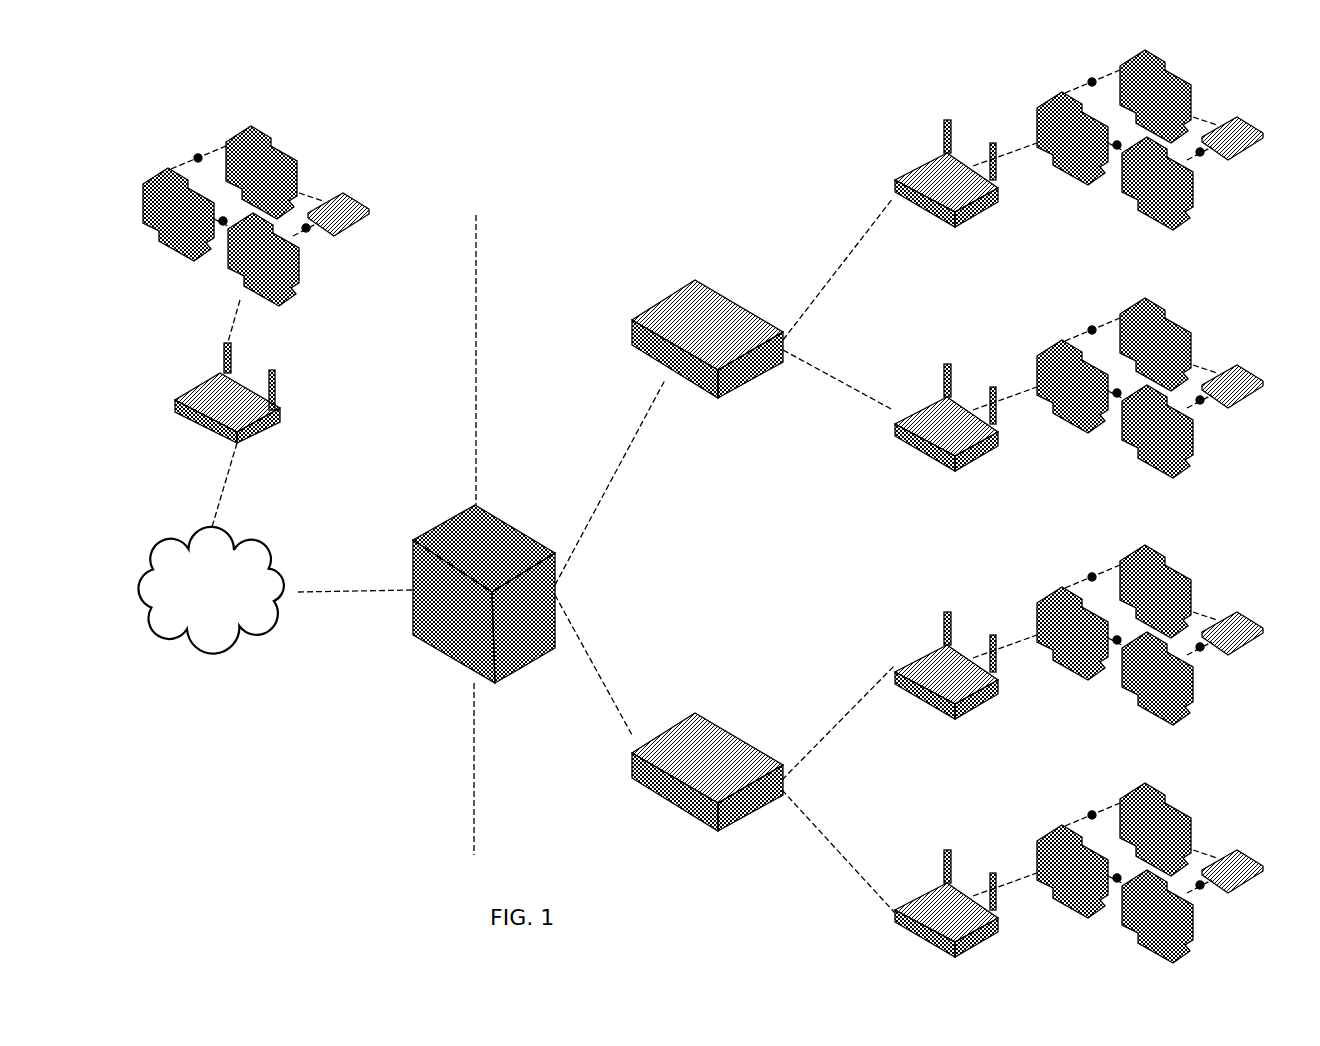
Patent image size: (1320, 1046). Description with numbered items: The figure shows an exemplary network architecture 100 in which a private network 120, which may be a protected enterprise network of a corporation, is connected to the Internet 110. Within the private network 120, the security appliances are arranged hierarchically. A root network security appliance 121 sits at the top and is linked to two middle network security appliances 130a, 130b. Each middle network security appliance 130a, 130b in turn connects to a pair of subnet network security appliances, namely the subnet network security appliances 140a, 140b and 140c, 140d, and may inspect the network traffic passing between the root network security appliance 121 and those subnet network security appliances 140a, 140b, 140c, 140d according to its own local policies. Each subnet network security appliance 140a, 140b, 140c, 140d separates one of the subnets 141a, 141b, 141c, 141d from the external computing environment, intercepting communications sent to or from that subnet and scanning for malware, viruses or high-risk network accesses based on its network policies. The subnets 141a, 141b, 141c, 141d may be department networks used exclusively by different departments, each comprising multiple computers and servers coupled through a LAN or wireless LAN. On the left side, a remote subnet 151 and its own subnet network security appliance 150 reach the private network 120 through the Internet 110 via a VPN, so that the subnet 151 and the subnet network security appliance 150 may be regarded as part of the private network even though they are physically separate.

The network architecture 100 is at (507, 64).
The Internet 110 is at (210, 590).
The private network 120 is at (580, 189).
The root network security appliance 121 is at (540, 499).
The middle network security appliance 130a is at (726, 244).
The middle network security appliance 130b is at (726, 694).
The subnet network security appliance 140a is at (968, 92).
The subnet network security appliance 140b is at (966, 351).
The subnet network security appliance 140c is at (969, 590).
The subnet network security appliance 140d is at (969, 840).
The subnet 141a is at (1272, 67).
The subnet 141b is at (1270, 314).
The subnet 141c is at (1286, 586).
The subnet 141d is at (1286, 824).
The subnet network security appliance 150 is at (351, 407).
The subnet 151 is at (382, 156).